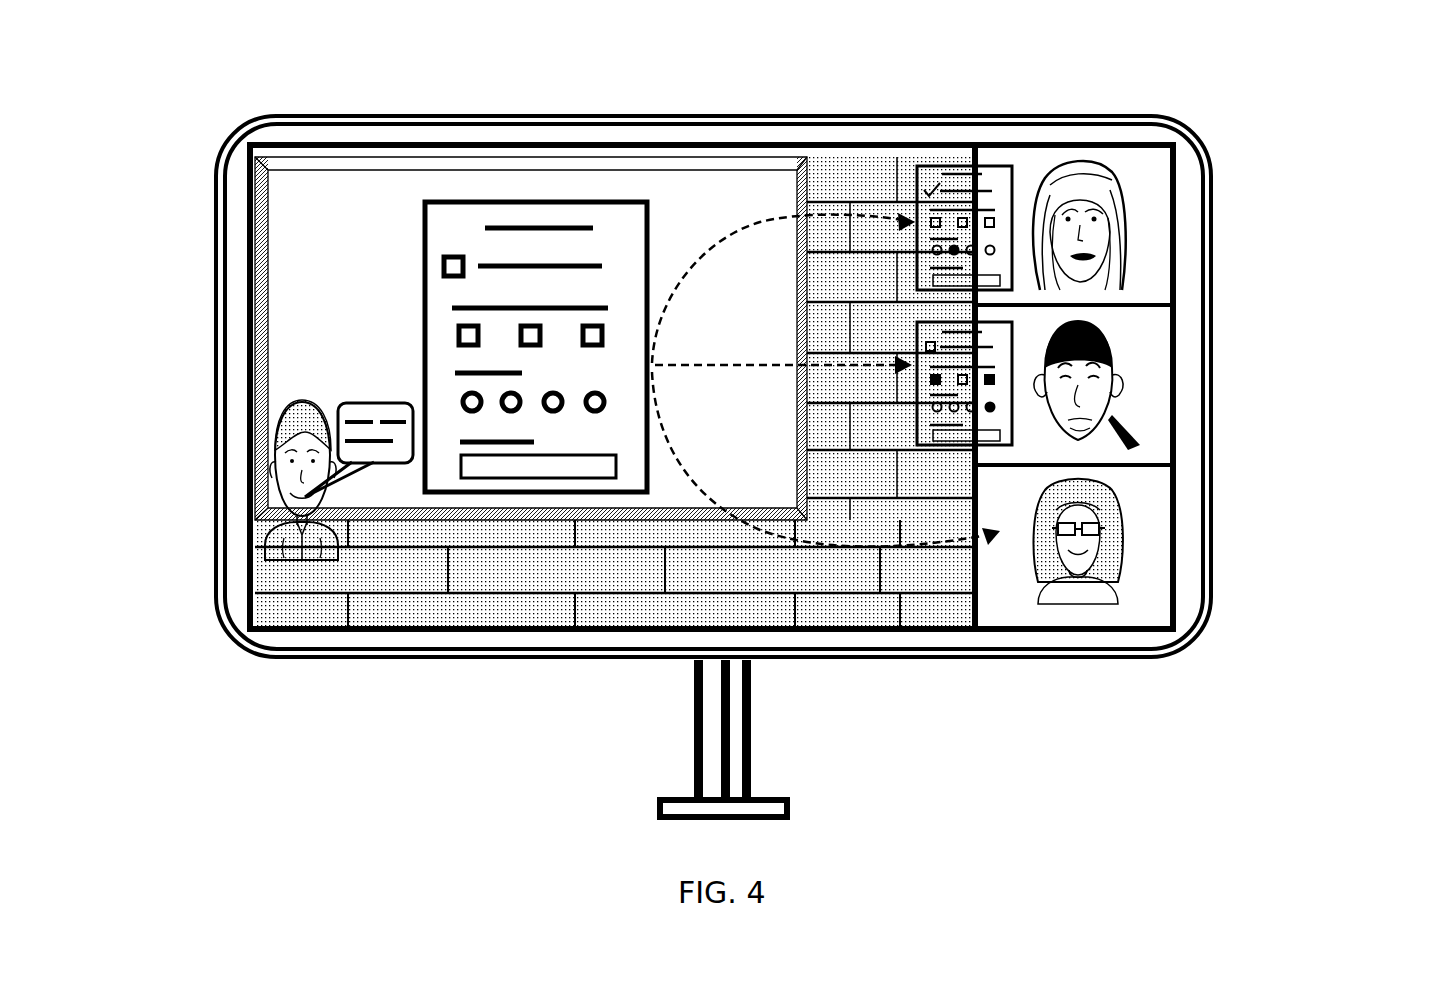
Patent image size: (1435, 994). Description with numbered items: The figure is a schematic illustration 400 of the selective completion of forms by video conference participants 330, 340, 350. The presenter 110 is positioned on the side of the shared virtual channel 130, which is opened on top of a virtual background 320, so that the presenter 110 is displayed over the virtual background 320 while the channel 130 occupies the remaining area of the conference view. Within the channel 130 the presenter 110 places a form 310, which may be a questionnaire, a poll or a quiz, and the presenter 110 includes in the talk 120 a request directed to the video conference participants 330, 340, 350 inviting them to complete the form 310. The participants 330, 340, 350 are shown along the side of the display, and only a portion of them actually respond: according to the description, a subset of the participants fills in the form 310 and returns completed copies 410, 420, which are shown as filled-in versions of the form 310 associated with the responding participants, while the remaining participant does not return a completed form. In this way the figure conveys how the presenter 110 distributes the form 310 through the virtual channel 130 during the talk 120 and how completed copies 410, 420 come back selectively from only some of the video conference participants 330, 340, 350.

The presenter 110 is at (268, 540).
The talk 120 is at (358, 402).
The virtual channel 130 is at (263, 142).
The form 310 is at (546, 200).
The virtual background 320 is at (874, 157).
The video conference participant 330 is at (1128, 258).
The video conference participant 340 is at (1125, 378).
The video conference participant 350 is at (1118, 540).
The schematic illustration 400 is at (1410, 110).
The completed copy 410 is at (942, 167).
The completed copy 420 is at (950, 447).